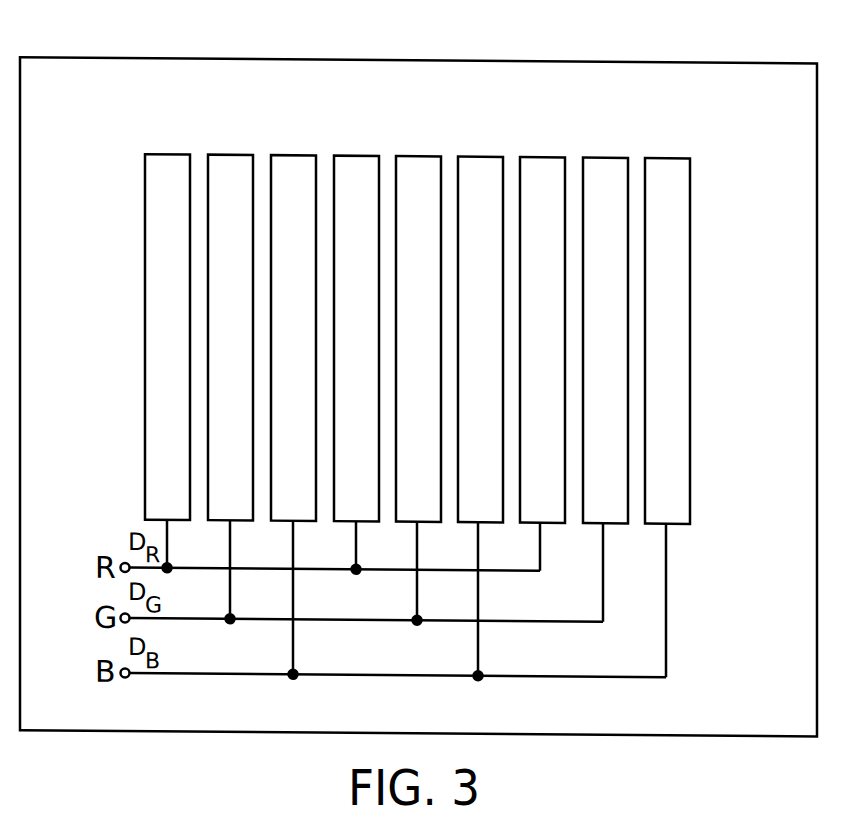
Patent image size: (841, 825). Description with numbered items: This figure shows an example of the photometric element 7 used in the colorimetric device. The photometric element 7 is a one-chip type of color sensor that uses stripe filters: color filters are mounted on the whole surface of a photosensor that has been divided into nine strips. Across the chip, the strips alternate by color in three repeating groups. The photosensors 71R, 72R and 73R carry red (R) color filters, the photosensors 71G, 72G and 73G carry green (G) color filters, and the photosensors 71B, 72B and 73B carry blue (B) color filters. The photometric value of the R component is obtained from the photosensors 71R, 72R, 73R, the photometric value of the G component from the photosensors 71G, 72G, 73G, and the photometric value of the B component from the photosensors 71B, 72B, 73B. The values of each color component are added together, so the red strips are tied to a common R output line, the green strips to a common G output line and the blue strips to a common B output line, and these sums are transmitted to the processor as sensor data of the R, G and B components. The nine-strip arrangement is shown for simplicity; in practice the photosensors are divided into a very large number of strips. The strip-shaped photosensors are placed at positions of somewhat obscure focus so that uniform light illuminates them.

The photometric element 7 is at (788, 71).
The photosensor with red color filter 71R is at (168, 153).
The photosensor with green color filter 71G is at (231, 153).
The photosensor with blue color filter 71B is at (285, 153).
The photosensor with red color filter 72R is at (357, 153).
The photosensor with green color filter 72G is at (417, 153).
The photosensor with blue color filter 72B is at (477, 153).
The photosensor with red color filter 73R is at (538, 153).
The photosensor with green color filter 73G is at (608, 153).
The photosensor with blue color filter 73B is at (657, 153).